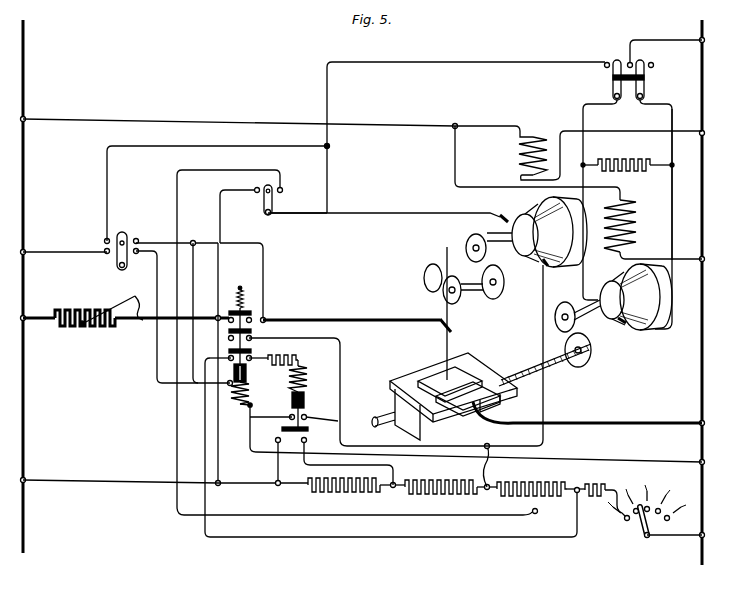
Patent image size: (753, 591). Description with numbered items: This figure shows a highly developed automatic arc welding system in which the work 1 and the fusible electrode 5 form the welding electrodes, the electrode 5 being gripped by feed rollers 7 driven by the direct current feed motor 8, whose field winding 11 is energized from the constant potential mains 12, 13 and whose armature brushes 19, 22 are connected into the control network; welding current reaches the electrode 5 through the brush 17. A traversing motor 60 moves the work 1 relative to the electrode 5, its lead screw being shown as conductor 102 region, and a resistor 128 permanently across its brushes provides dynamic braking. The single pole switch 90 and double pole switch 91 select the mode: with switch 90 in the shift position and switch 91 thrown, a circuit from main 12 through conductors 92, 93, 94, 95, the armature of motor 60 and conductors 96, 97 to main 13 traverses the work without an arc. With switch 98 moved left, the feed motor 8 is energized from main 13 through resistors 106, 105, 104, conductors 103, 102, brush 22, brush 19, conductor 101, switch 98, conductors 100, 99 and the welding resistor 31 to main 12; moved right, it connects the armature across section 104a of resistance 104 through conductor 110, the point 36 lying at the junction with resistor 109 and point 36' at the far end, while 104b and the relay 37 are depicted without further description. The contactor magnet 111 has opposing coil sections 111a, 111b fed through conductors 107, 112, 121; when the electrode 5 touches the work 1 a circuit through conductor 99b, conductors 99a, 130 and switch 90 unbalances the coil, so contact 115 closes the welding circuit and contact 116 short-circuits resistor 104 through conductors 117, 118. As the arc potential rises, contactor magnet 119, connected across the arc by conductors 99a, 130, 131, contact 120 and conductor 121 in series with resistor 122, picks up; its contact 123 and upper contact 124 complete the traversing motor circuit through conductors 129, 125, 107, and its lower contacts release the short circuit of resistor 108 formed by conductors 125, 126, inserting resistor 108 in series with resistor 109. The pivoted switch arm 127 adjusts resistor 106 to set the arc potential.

The work 1 is at (476, 368).
The fusible electrode 5 is at (452, 347).
The feed rollers 7 is at (428, 282).
The feed motor 8 is at (537, 232).
The field winding 11 is at (578, 192).
The main 12 is at (22, 53).
The main 13 is at (705, 65).
The brush 17 is at (438, 331).
The brush 19 is at (499, 215).
The brush 22 is at (540, 263).
The welding resistor 31 is at (68, 311).
The point 36 is at (480, 454).
The point 36' is at (580, 474).
The relay 37 is at (228, 317).
The traversing motor 60 is at (622, 323).
The single pole switch 90 is at (115, 257).
The double pole switch 91 is at (648, 77).
The conductor 92 is at (68, 255).
The conductor 93 is at (108, 182).
The conductor 94 is at (495, 61).
The conductor 95 is at (672, 212).
The conductor 96 is at (583, 120).
The conductor 97 is at (661, 40).
The switch 98 is at (276, 196).
The conductor 99 is at (142, 322).
The conductor 99a is at (372, 322).
The conductor 99b is at (631, 423).
The conductor 100 is at (226, 223).
The conductor 101 is at (422, 213).
The conductor 102 is at (544, 398).
The conductor 103 is at (486, 479).
The resistance 104 is at (545, 480).
The section of resistance 104 104a is at (530, 511).
The contact 104b is at (548, 500).
The resistor 105 is at (606, 482).
The resistor 106 is at (663, 498).
The conductor 107 is at (136, 481).
The resistor 108 is at (339, 496).
The resistor 109 is at (431, 480).
The conductor 110 is at (208, 172).
The contactor magnet 111 is at (246, 406).
The upper section of contactor coil 111a is at (247, 382).
The lower section of contactor coil 111b is at (248, 394).
The conductor 112 is at (220, 452).
The contact 115 is at (241, 290).
The contact 116 is at (252, 333).
The conductor 117 is at (343, 392).
The conductor 118 is at (204, 415).
The contactor magnet 119 is at (288, 417).
The contact 120 is at (218, 350).
The conductor 121 is at (583, 462).
The resistor 122 is at (283, 353).
The contact 123 is at (306, 440).
The upper contact 124 is at (307, 419).
The conductor 125 is at (276, 473).
The conductor 126 is at (303, 466).
The pivoted switch arm 127 is at (638, 528).
The resistor 128 is at (629, 160).
The conductor 129 is at (276, 441).
The conductor 130 is at (266, 281).
The conductor 131 is at (194, 270).